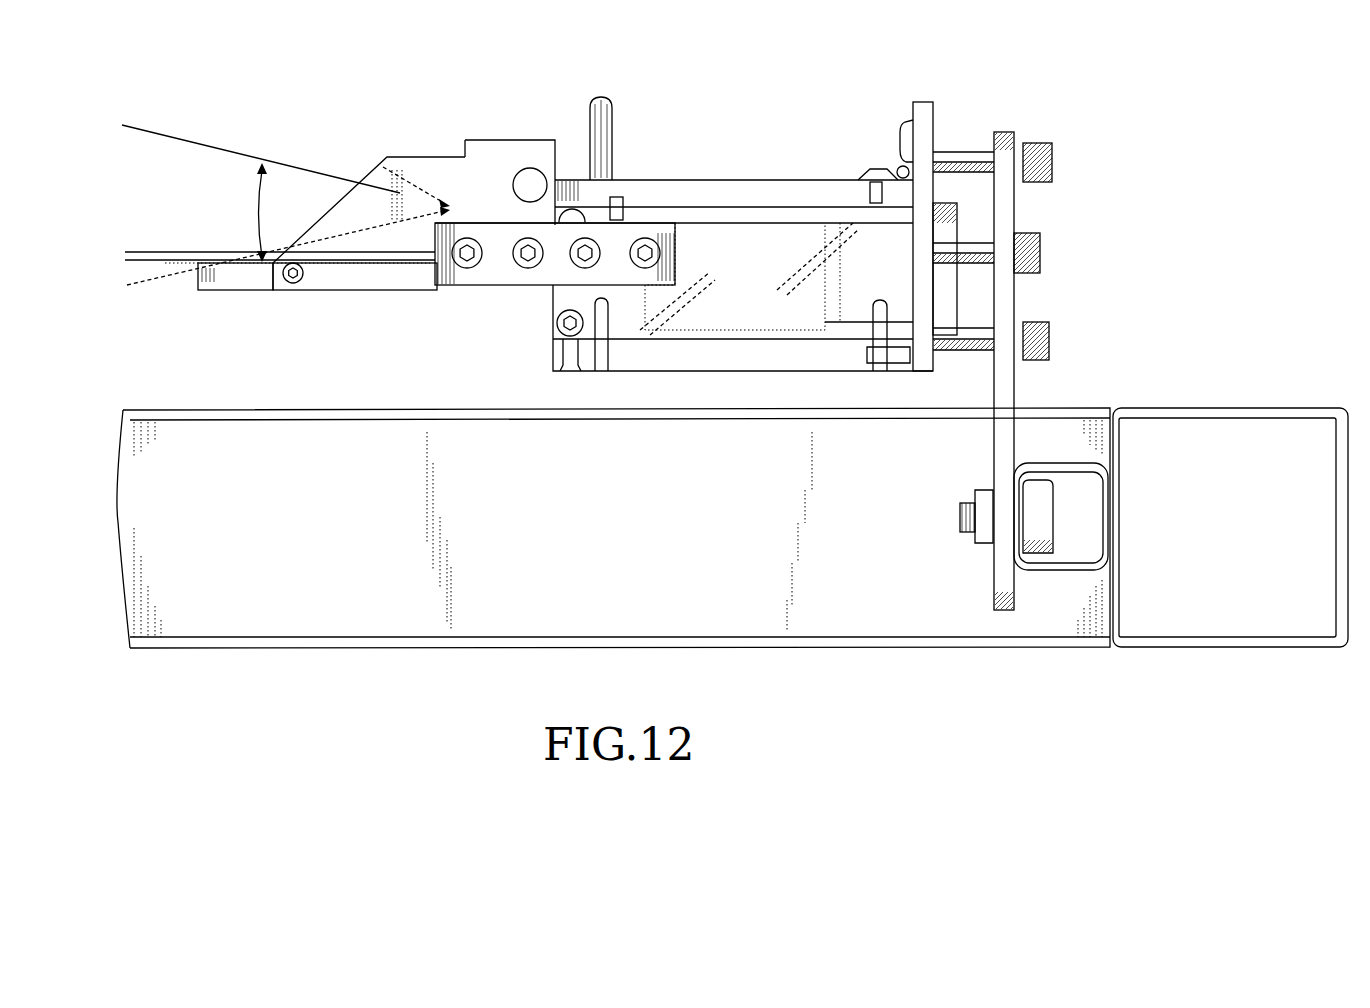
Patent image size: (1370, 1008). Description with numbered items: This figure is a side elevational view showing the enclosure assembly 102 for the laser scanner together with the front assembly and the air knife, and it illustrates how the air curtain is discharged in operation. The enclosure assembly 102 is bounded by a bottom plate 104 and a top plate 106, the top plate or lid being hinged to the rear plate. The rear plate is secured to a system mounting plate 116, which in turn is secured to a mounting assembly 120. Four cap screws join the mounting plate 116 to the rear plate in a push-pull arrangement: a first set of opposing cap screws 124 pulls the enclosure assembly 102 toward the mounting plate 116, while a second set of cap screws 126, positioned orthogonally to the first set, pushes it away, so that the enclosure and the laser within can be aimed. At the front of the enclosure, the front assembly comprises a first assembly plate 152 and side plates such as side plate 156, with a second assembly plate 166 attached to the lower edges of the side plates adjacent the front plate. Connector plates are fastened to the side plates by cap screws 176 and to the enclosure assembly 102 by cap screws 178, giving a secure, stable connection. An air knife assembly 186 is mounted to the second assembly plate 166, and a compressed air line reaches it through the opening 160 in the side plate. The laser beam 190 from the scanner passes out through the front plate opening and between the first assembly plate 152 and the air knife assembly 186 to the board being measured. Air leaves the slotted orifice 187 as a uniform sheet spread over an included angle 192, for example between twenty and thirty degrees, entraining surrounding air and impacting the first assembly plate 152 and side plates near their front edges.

The enclosure assembly 102 is at (757, 115).
The bottom plate 104 is at (757, 355).
The top plate 106 is at (822, 193).
The system mounting plate 116 is at (1007, 302).
The mounting assembly 120 is at (510, 613).
The cap screws 124 is at (1052, 163).
The cap screws 126 is at (895, 157).
The first assembly plate 152 is at (247, 278).
The side plate 156 is at (348, 267).
The opening 160 is at (533, 187).
The second assembly plate 166 is at (532, 143).
The cap screws 176 is at (528, 258).
The cap screws 178 is at (660, 253).
The air knife assembly 186 is at (492, 187).
The slotted orifice 187 is at (447, 203).
The laser beam 190 is at (163, 262).
The included angle 192 is at (255, 203).